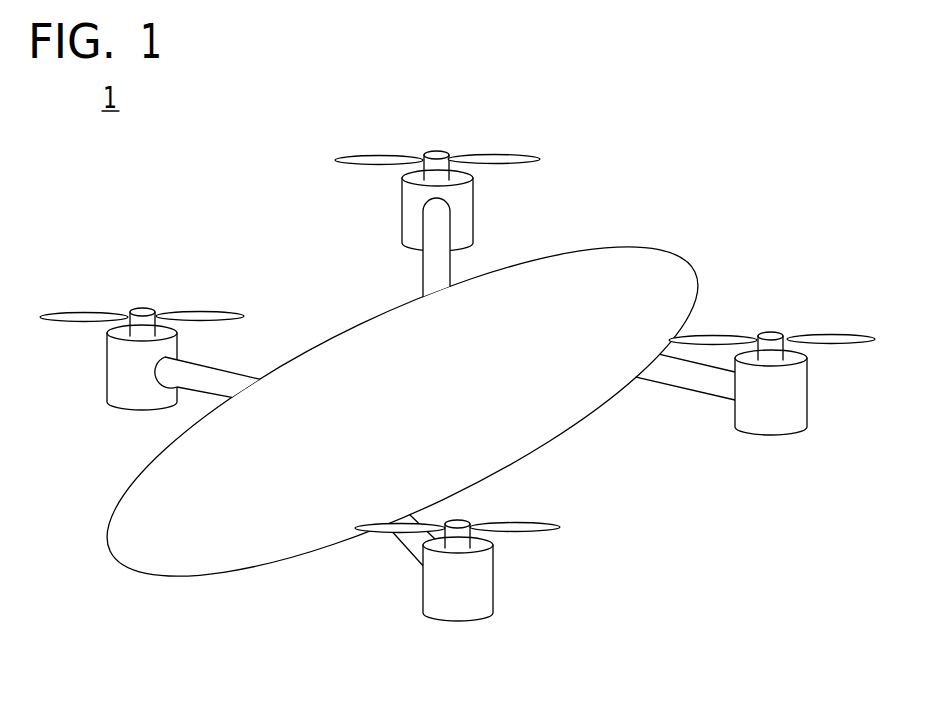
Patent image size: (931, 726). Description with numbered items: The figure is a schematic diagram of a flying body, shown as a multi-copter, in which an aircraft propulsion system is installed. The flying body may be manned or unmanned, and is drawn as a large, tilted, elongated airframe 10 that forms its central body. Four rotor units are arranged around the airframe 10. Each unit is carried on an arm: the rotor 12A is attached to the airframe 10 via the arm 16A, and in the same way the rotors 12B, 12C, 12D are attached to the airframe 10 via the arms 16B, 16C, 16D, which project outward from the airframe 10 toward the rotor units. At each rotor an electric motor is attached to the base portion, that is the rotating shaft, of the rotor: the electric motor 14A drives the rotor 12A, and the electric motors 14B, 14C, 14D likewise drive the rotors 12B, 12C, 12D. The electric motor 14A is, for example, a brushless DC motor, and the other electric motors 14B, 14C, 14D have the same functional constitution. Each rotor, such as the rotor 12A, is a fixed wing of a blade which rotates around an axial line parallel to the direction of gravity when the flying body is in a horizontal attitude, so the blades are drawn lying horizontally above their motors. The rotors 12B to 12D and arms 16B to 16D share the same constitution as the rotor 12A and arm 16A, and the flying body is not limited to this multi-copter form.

The airframe 10 is at (145, 573).
The rotor 12A is at (198, 311).
The rotor 12B is at (490, 152).
The rotor 12C is at (523, 535).
The rotor 12D is at (838, 347).
The electric motor 14A is at (106, 365).
The electric motor 14B is at (401, 207).
The electric motor 14C is at (455, 620).
The electric motor 14D is at (770, 432).
The arm 16A is at (248, 367).
The arm 16B is at (423, 262).
The arm 16C is at (405, 550).
The arm 16D is at (690, 395).